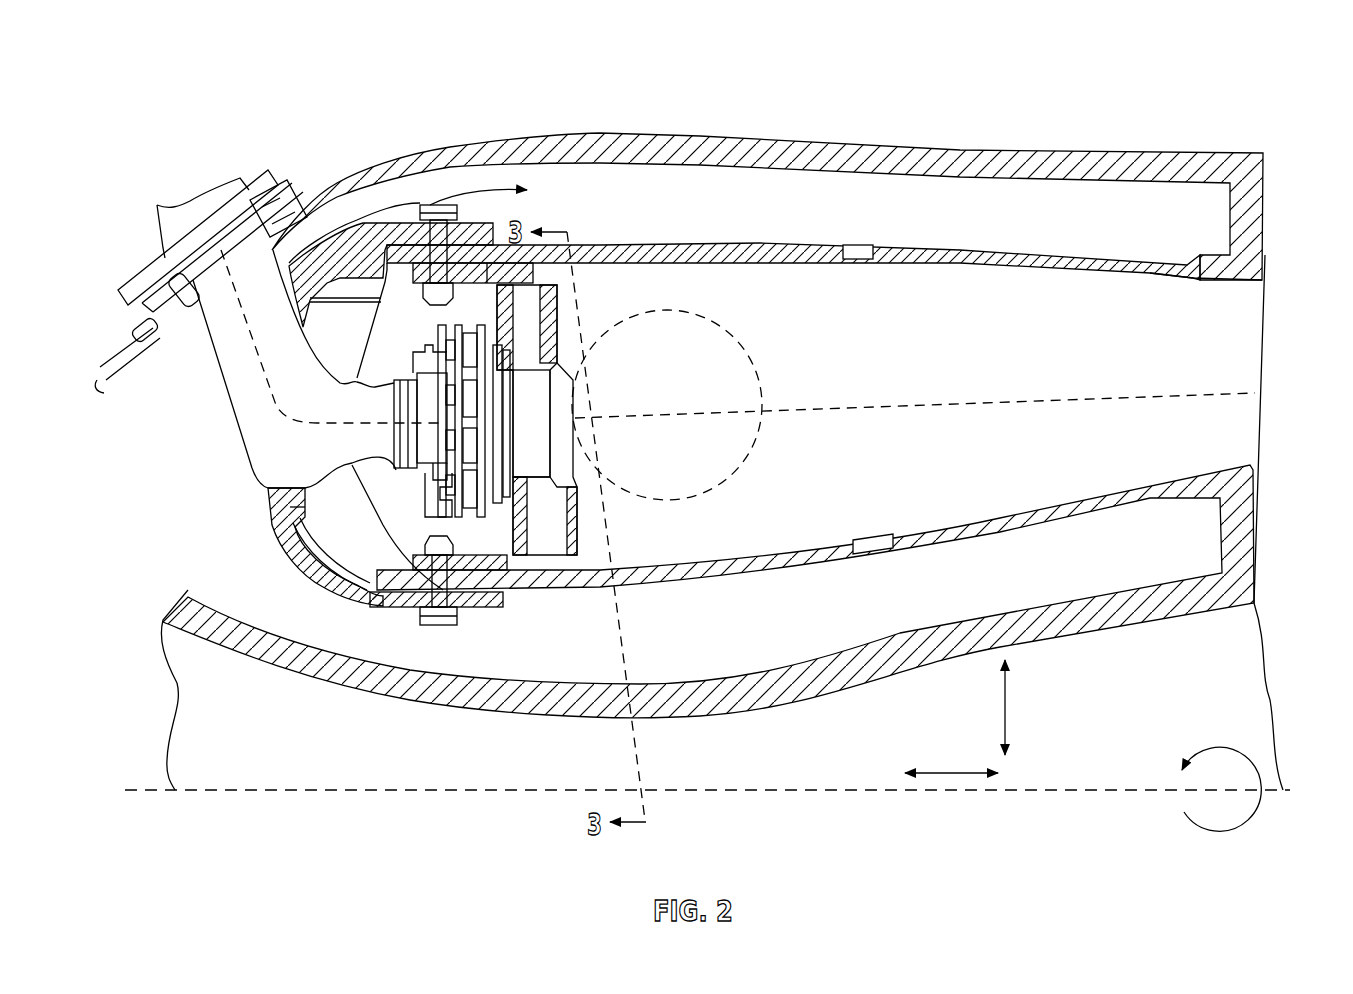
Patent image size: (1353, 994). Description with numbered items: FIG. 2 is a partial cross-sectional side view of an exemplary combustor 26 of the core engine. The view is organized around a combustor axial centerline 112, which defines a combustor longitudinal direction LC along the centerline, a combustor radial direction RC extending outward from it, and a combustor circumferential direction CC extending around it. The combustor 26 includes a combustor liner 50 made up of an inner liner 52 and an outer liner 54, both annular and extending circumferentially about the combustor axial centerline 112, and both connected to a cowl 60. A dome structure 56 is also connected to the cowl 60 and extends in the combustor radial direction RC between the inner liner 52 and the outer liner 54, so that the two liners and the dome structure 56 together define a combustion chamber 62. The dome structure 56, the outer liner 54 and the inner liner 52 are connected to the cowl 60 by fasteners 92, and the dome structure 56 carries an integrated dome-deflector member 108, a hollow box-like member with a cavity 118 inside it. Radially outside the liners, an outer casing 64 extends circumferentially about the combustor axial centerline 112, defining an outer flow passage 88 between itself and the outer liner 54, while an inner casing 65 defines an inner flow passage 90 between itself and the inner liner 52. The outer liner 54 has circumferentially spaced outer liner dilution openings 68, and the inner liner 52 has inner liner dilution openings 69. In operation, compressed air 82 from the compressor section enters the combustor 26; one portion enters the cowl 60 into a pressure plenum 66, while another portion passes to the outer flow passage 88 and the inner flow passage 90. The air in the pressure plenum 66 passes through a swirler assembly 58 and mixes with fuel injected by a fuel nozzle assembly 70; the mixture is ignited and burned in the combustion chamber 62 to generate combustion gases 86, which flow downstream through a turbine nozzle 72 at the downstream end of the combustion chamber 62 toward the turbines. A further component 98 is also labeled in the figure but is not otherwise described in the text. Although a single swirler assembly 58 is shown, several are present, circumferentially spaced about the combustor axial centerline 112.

The combustor 26 is at (1148, 125).
The combustor liner 50 is at (1110, 252).
The inner liner 52 is at (582, 598).
The outer liner 54 is at (737, 245).
The dome structure 56 is at (578, 520).
The swirler assembly 58 is at (445, 500).
The cowl 60 is at (292, 585).
The combustion chamber 62 is at (679, 410).
The outer casing 64 is at (683, 137).
The inner casing 65 is at (560, 720).
The pressure plenum 66 is at (420, 342).
The outer liner dilution openings 68 is at (863, 238).
The inner liner dilution openings 69 is at (875, 562).
The fuel nozzle assembly 70 is at (214, 374).
The turbine nozzle 72 is at (1310, 347).
The compressed air 82 is at (175, 500).
The combustion gases 86 is at (722, 327).
The outer flow passage 88 is at (632, 207).
The inner flow passage 90 is at (675, 660).
The fasteners 92 is at (447, 200).
The service line assembly 98 is at (80, 389).
The integrated dome-deflector member 108 is at (560, 318).
The combustor axial centerline 112 is at (1088, 790).
The cavity 118 is at (543, 333).
The combustor longitudinal direction LC is at (950, 772).
The combustor radial direction RC is at (1005, 707).
The combustor circumferential direction CC is at (1218, 748).